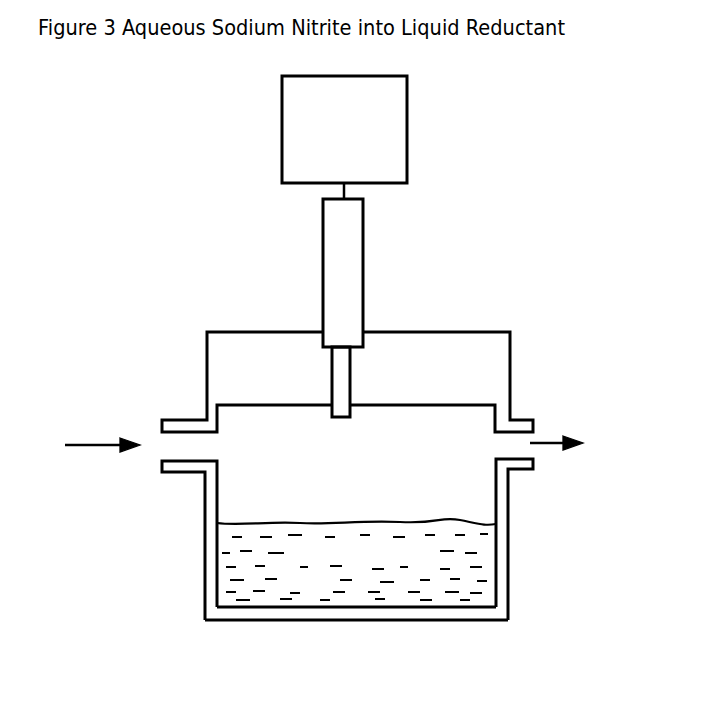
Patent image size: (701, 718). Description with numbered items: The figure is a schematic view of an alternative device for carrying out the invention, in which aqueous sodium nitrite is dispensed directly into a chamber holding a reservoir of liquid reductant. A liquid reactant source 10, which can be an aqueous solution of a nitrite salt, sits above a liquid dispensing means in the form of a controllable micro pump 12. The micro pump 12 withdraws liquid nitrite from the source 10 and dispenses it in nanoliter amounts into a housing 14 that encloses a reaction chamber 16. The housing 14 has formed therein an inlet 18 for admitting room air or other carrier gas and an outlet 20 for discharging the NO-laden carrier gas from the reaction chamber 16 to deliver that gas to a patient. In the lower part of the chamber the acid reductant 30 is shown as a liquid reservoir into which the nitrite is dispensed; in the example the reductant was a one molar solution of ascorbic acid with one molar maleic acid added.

The liquid reactant source 10 is at (407, 146).
The micro pump 12 is at (363, 238).
The housing 14 is at (280, 326).
The reaction chamber 16 is at (458, 440).
The inlet 18 is at (165, 474).
The outlet 20 is at (533, 471).
The acid reductant 30 is at (495, 572).